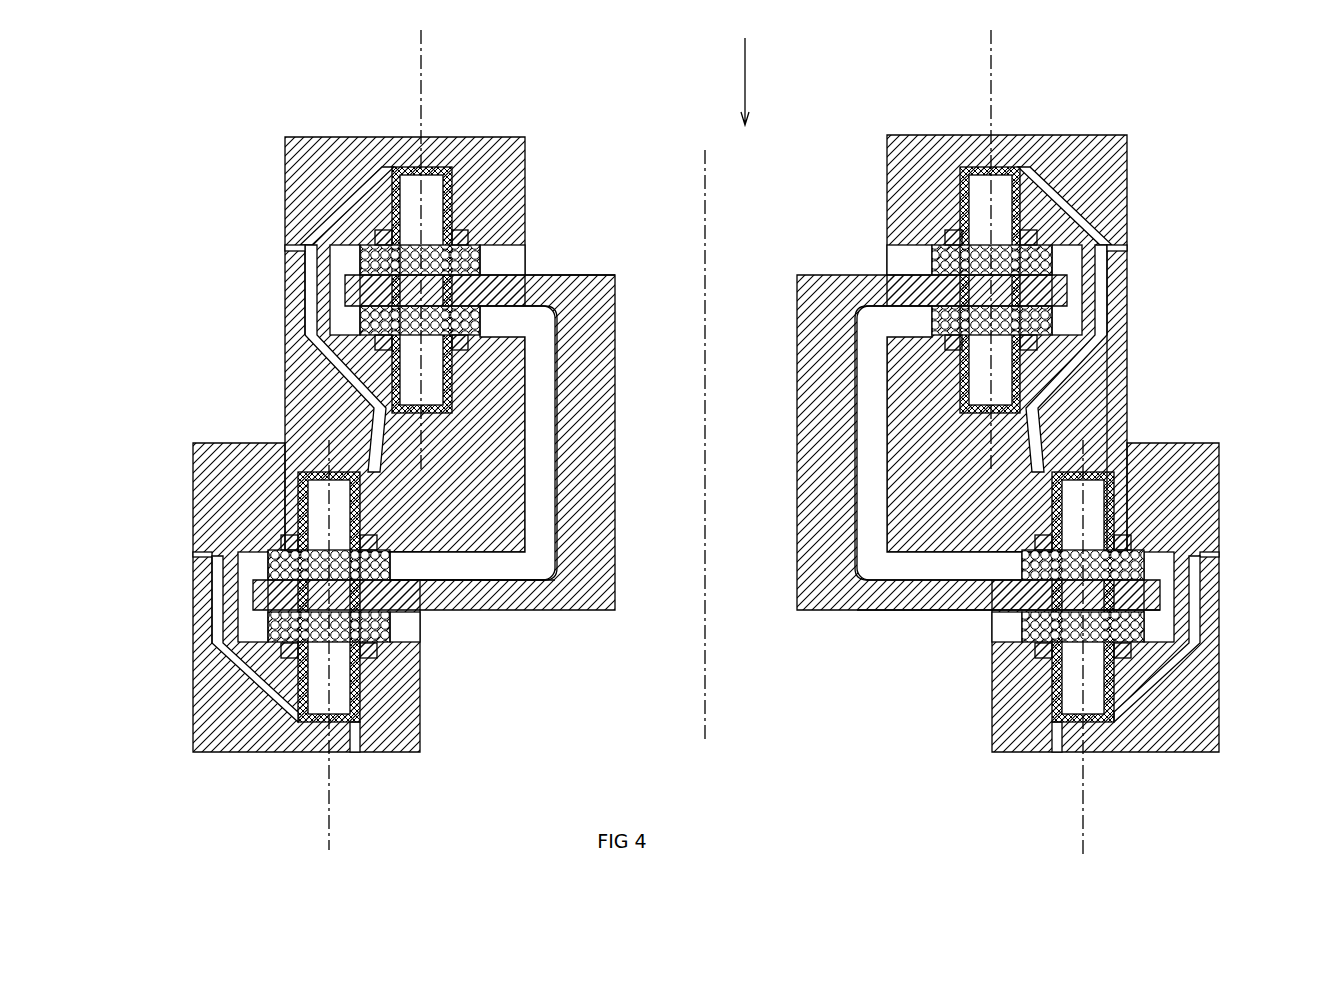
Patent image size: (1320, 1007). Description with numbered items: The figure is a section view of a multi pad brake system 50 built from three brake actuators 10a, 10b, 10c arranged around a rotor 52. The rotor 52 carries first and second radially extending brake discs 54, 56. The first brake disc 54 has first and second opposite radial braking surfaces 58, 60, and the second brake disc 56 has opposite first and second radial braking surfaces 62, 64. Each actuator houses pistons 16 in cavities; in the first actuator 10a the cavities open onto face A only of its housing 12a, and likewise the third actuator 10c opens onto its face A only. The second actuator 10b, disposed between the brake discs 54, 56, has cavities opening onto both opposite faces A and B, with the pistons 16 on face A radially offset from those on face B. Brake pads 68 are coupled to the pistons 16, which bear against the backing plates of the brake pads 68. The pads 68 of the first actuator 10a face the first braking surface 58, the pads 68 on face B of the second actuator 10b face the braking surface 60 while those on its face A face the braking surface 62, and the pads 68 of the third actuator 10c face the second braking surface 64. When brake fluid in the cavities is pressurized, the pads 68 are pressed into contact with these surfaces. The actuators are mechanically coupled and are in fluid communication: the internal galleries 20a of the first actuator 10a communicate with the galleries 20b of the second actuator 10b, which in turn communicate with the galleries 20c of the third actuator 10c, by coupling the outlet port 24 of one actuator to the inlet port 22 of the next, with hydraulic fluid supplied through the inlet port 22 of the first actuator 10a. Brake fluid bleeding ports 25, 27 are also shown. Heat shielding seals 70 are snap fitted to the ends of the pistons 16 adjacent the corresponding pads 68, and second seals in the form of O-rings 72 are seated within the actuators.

The first brake actuator 10a is at (1180, 705).
The second brake actuator 10b is at (1110, 375).
The third brake actuator 10c is at (297, 170).
The housing 12a is at (331, 830).
The pistons 16 is at (395, 240).
The internal galleries 20a is at (262, 732).
The galleries 20b is at (335, 368).
The galleries 20c is at (1128, 137).
The inlet port 22 is at (365, 195).
The outlet port 24 is at (300, 265).
The brake fluid bleeding port 25 is at (193, 552).
The brake fluid bleeding port 27 is at (285, 245).
The multi pad brake system 50 is at (750, 67).
The rotor 52 is at (825, 370).
The first brake disc 54 is at (927, 612).
The second brake disc 56 is at (520, 293).
The first radial braking surface 58 is at (990, 620).
The second radial braking surface 60 is at (897, 587).
The first radial braking surface 62 is at (545, 273).
The second radial braking surface 64 is at (572, 265).
The brake pads 68 is at (378, 322).
The heat shielding seals 70 is at (460, 338).
The O-rings 72 is at (384, 338).
The face A is at (520, 322).
The face B is at (470, 568).